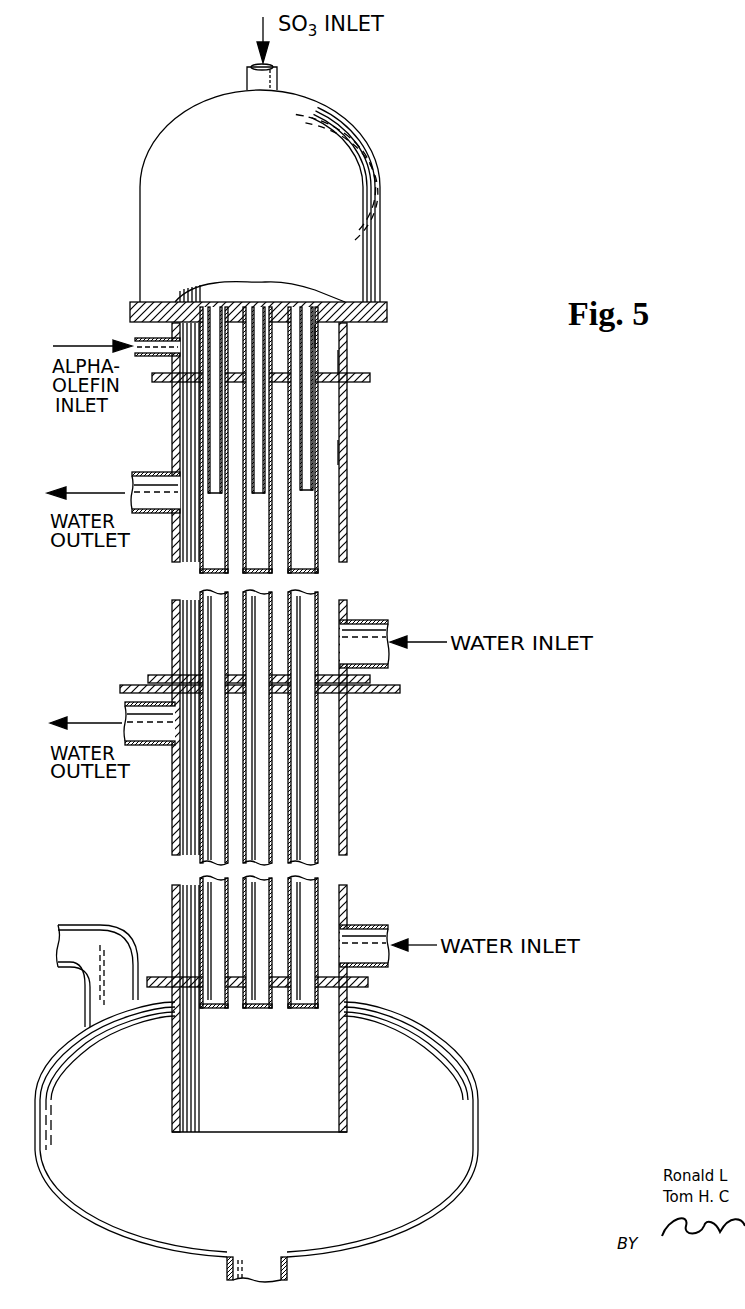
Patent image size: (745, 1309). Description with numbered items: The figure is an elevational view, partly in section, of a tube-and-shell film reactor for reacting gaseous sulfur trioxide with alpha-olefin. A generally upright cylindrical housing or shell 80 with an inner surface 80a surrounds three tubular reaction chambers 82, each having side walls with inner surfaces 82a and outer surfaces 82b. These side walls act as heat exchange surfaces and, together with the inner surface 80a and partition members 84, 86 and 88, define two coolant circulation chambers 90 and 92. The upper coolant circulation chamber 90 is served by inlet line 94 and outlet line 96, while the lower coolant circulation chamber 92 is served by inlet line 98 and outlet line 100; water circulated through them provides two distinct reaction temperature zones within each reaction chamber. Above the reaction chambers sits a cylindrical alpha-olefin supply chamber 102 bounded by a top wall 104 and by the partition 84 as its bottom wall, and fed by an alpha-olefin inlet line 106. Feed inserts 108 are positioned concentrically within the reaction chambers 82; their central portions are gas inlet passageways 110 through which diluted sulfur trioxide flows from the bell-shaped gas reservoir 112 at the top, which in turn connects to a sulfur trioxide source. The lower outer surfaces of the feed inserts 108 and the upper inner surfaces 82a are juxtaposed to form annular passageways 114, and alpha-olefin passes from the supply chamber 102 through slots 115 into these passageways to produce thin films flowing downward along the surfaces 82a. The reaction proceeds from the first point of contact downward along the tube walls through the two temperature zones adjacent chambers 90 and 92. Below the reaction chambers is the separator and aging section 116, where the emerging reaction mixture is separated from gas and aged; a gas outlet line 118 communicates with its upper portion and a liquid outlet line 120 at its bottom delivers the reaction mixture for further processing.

The cylindrical housing or shell 80 is at (347, 471).
The inner surface of housing 80a is at (340, 454).
The tubular reaction chambers 82 is at (302, 538).
The inner surfaces of reaction chamber side walls 82a is at (306, 1002).
The outer surfaces of reaction chamber side walls 82b is at (318, 797).
The partition member 84 is at (371, 380).
The partition member 86 is at (372, 680).
The partition member 88 is at (370, 981).
The coolant circulation chamber 90 is at (196, 437).
The coolant circulation chamber 92 is at (196, 903).
The inlet line 94 is at (370, 620).
The outlet line 96 is at (156, 514).
The inlet line 98 is at (365, 925).
The outlet line 100 is at (157, 746).
The cylindrical alpha-olefin supply chamber 102 is at (335, 364).
The top wall 104 is at (388, 311).
The alpha-olefin inlet line 106 is at (140, 338).
The feed inserts 108 is at (302, 497).
The gas inlet passageways 110 is at (306, 302).
The bell-shaped gas reservoir 112 is at (251, 185).
The annular passageways 114 is at (315, 414).
The slots 115 is at (320, 343).
The separator and aging section 116 is at (462, 1063).
The gas outlet line 118 is at (85, 976).
The liquid outlet line 120 is at (288, 1270).